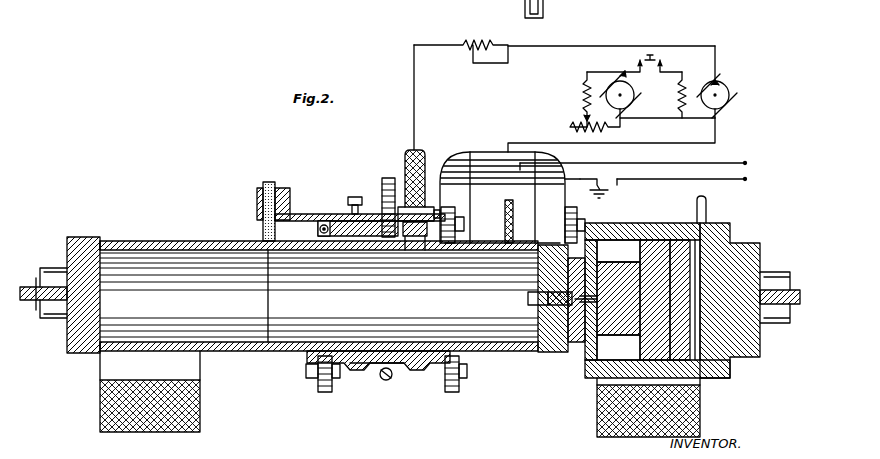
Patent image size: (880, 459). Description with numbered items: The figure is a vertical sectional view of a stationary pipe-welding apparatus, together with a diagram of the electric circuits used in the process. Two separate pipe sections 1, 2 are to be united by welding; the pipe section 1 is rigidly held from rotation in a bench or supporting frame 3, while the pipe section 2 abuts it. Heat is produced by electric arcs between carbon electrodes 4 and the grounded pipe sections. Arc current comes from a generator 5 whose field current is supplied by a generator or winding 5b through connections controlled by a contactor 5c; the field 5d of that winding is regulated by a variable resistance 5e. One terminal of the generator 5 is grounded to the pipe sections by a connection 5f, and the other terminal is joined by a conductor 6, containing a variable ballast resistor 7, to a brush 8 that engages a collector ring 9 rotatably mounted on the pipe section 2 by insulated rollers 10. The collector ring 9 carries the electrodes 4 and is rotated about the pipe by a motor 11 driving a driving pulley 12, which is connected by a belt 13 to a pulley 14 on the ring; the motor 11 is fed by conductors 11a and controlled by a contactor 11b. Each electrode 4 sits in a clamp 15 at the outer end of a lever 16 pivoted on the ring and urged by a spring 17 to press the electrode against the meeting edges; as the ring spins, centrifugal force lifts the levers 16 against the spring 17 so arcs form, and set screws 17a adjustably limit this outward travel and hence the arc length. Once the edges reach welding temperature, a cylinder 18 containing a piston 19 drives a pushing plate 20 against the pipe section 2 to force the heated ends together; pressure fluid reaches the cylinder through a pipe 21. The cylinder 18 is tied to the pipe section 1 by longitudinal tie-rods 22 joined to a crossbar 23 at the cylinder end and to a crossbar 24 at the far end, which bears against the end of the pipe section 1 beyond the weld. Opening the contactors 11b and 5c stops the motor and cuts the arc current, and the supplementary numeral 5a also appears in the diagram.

The pipe section 1 is at (238, 351).
The pipe section 2 is at (500, 357).
The bench or supporting frame 3 is at (154, 433).
The electrodes 4 is at (268, 182).
The generator 5 is at (729, 88).
The resistor 5a is at (684, 90).
The generator or winding 5b is at (634, 88).
The contactor 5c is at (662, 58).
The field 5d is at (583, 95).
The variable resistance 5e is at (570, 127).
The connection 5f is at (505, 214).
The conductor 6 is at (580, 46).
The variable ballast resistor 7 is at (480, 45).
The brush 8 is at (410, 243).
The collector ring 9 is at (427, 237).
The insulated rollers 10 is at (323, 392).
The motor 11 is at (480, 152).
The conductors 11a is at (722, 179).
The contactor 11b is at (610, 190).
The driving pulley 12 is at (386, 178).
The belt 13 is at (385, 381).
The pulley 14 is at (392, 374).
The clamp 15 is at (286, 188).
The lever 16 is at (300, 214).
The spring 17 is at (360, 214).
The set screws 17a is at (352, 197).
The cylinder 18 is at (648, 240).
The piston 19 is at (668, 240).
The pushing plate 20 is at (556, 352).
The pipe 21 is at (706, 206).
The tie-rods 22 is at (44, 282).
The crossbar 23 is at (740, 358).
The crossbar 24 is at (84, 353).